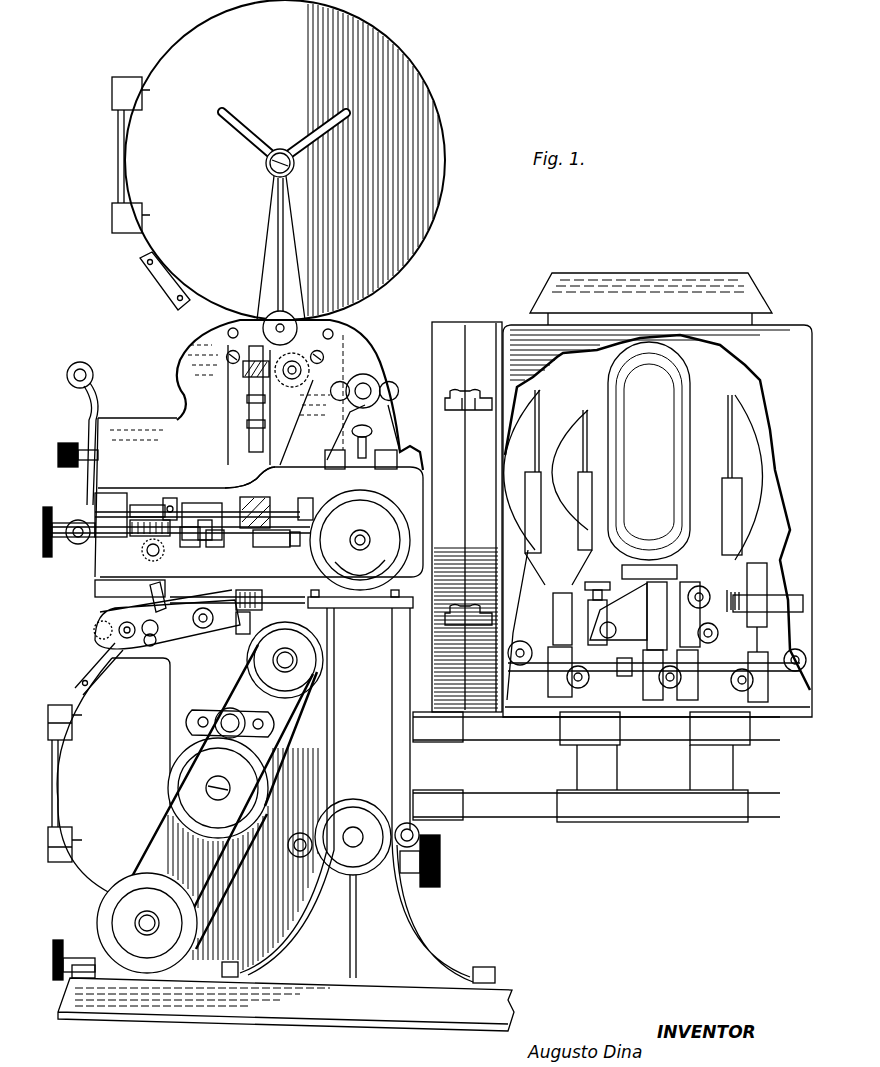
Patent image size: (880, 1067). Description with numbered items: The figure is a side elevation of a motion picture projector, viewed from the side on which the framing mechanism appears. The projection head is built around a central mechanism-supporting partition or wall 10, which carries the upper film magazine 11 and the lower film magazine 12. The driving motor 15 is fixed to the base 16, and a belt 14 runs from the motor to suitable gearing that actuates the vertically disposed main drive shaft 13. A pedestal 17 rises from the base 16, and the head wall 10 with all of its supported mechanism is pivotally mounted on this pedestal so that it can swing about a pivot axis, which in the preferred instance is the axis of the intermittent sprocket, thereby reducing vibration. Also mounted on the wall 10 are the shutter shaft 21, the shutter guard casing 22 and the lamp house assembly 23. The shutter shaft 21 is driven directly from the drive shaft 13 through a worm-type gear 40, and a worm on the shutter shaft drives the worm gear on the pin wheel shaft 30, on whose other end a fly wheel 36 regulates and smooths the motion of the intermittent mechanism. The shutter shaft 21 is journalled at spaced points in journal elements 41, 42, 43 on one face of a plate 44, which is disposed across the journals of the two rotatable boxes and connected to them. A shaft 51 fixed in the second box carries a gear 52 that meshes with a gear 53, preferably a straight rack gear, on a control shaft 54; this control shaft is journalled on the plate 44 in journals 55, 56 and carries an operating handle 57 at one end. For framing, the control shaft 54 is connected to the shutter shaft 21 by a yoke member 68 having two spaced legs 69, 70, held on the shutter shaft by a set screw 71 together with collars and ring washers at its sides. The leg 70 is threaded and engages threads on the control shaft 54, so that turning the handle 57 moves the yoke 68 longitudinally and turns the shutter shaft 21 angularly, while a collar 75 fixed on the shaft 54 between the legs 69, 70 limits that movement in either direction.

The mechanism-supporting partition or wall 10 is at (352, 356).
The upper film magazine 11 is at (278, 172).
The lower film magazine 12 is at (183, 814).
The main drive shaft 13 is at (249, 420).
The belt 14 is at (168, 798).
The driving motor 15 is at (193, 925).
The base 16 is at (322, 1012).
The pedestal 17 is at (350, 805).
The shutter shaft 21 is at (130, 495).
The shutter guard casing 22 is at (445, 328).
The lamp house assembly 23 is at (508, 330).
The pin wheel shaft 30 is at (360, 539).
The fly wheel 36 is at (380, 553).
The gear on the shutter shaft 40 is at (250, 482).
The journal element 41 is at (406, 512).
The journal element 42 is at (306, 515).
The journal element 43 is at (105, 500).
The plate 44 is at (245, 598).
The shaft 51 is at (150, 595).
The gear 52 is at (143, 552).
The gear 53 is at (160, 503).
The control shaft 54 is at (266, 553).
The journal 55 is at (93, 555).
The journal 56 is at (288, 554).
The operating handle 57 is at (48, 560).
The yoke member 68 is at (240, 508).
The leg of the yoke 69 is at (188, 551).
The leg of the yoke 70 is at (218, 553).
The set screw 71 is at (178, 500).
The collar 75 is at (202, 521).